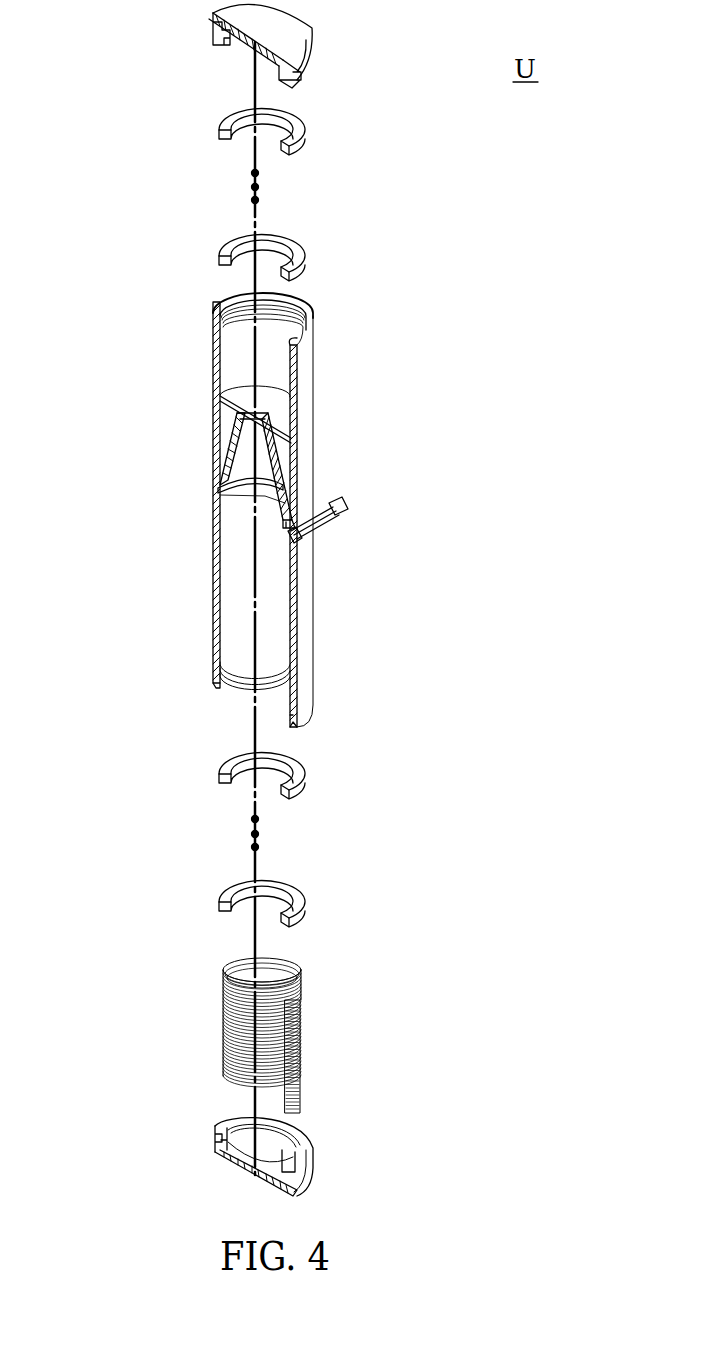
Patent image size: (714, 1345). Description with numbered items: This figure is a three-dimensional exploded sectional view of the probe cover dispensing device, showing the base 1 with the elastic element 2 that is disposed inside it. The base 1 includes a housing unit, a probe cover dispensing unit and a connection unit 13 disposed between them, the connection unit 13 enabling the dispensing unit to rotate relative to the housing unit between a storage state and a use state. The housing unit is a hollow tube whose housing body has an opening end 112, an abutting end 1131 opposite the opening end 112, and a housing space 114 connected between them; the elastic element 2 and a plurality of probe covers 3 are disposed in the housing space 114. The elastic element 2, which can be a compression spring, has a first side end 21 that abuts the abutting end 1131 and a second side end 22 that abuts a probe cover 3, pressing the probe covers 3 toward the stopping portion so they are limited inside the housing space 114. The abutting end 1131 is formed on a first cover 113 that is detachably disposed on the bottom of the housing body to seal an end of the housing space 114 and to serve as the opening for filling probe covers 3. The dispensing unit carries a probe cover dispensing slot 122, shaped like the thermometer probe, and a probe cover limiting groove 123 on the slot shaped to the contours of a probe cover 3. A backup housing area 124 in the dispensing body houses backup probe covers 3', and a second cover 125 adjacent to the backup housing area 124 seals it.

The second cover 125 is at (303, 30).
The backup probe covers 3' is at (216, 195).
The base 1 is at (197, 420).
The backup housing area 124 is at (279, 376).
The probe cover dispensing slot 122 is at (264, 468).
The probe cover limiting groove 123 is at (218, 490).
The opening end 112 is at (238, 498).
The connection unit 13 is at (328, 525).
The housing space 114 is at (279, 612).
The probe cover 3 is at (217, 840).
The elastic element 2 is at (199, 1023).
The second side end 22 is at (293, 988).
The first side end 21 is at (292, 1105).
The abutting end 1131 is at (298, 1141).
The first cover 113 is at (305, 1177).